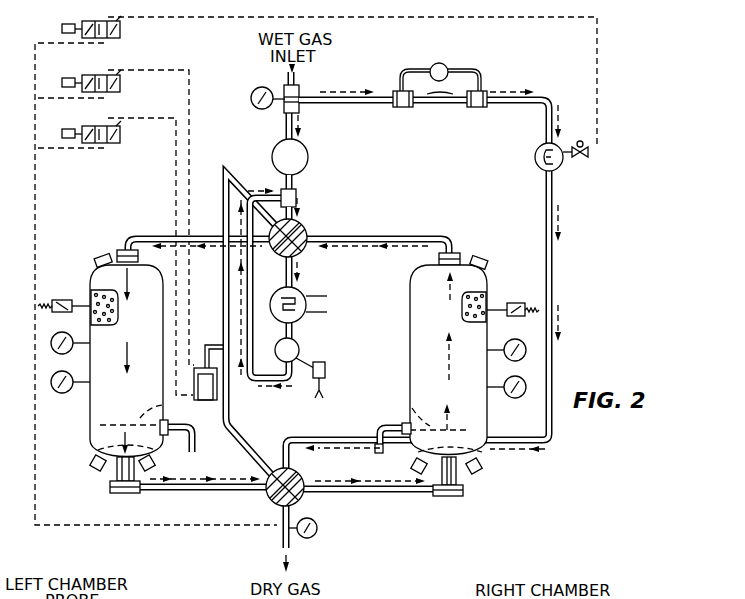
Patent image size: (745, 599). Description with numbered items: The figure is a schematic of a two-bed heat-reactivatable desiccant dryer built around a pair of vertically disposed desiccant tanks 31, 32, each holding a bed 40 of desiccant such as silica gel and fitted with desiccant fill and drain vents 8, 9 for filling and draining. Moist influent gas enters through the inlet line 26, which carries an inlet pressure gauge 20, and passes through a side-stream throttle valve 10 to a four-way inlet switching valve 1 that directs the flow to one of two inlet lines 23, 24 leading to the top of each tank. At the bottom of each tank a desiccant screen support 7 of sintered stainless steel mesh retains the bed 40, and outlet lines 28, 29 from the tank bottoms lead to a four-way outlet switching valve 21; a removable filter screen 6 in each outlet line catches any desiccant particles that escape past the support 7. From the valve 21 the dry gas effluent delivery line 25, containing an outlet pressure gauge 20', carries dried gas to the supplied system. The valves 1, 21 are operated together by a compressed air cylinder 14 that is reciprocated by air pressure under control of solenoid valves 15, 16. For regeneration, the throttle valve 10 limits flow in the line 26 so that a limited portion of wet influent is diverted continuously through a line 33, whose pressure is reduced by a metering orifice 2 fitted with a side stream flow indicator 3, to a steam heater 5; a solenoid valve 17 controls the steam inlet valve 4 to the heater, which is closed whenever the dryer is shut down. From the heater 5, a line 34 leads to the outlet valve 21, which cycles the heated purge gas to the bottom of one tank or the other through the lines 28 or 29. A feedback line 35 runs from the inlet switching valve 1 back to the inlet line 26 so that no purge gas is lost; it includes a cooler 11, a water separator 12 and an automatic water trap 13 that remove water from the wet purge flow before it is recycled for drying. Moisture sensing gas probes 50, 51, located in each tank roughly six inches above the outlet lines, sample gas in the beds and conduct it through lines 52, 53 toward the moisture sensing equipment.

The four-way inlet switching valve 1 is at (305, 230).
The metering orifice 2 is at (434, 104).
The side stream flow indicator 3 is at (447, 68).
The steam inlet valve 4 is at (588, 155).
The steam heater 5 is at (535, 160).
The filter screen 6 is at (109, 488).
The desiccant screen support 7 is at (92, 446).
The desiccant fill and drain vent 8 is at (92, 465).
The desiccant fill and drain vent 9 is at (100, 257).
The side-stream throttle valve 10 is at (308, 159).
The cooler 11 is at (327, 296).
The water separator 12 is at (300, 344).
The automatic water trap 13 is at (326, 369).
The compressed air cylinder 14 is at (200, 356).
The solenoid valve 15 is at (120, 85).
The solenoid valve 16 is at (120, 136).
The solenoid valve 17 is at (120, 31).
The inlet pressure gauge 20 is at (246, 91).
The outlet pressure gauge 20' is at (322, 540).
The four-way outlet switching valve 21 is at (266, 495).
The inlet line 23 is at (158, 236).
The inlet line 24 is at (413, 236).
The dry gas effluent delivery line 25 is at (296, 511).
The inlet line 26 is at (299, 84).
The outlet line 28 is at (186, 490).
The outlet line 29 is at (388, 493).
The desiccant tank 31 is at (136, 412).
The desiccant tank 32 is at (458, 407).
The line 33 is at (537, 105).
The line 34 is at (561, 270).
The feedback line 35 is at (265, 288).
The bed of desiccant 40 is at (92, 292).
The moisture sensing gas probe 50 is at (165, 405).
The moisture sensing gas probe 51 is at (409, 408).
The line 52 is at (196, 440).
The line 53 is at (380, 432).